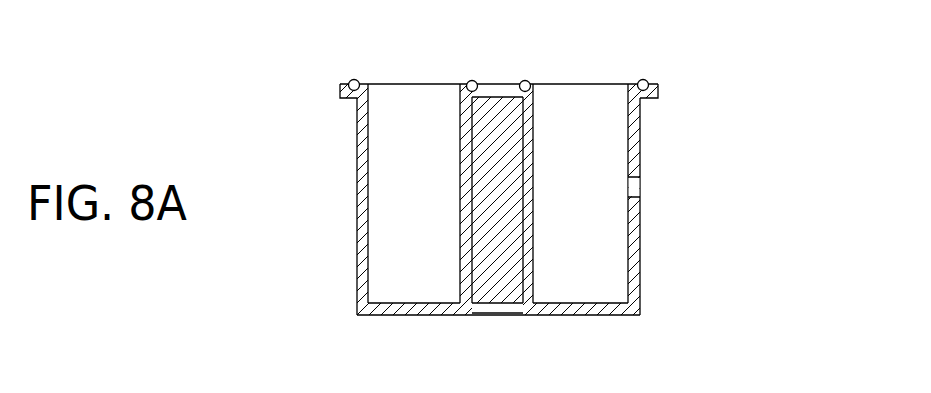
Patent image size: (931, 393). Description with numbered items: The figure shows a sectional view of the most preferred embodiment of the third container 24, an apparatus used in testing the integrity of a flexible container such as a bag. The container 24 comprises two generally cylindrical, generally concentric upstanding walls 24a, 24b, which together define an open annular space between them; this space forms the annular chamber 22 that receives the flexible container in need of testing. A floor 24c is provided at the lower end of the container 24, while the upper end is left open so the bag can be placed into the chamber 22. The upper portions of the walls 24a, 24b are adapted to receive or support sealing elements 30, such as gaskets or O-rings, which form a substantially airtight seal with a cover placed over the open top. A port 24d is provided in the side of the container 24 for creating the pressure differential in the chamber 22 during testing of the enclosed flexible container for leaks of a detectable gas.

The chamber 22 is at (393, 211).
The third container 24 is at (566, 202).
The upstanding wall 24a is at (640, 267).
The upstanding wall 24b is at (526, 79).
The floor 24c is at (557, 313).
The port 24d is at (640, 186).
The sealing element 30 is at (355, 79).